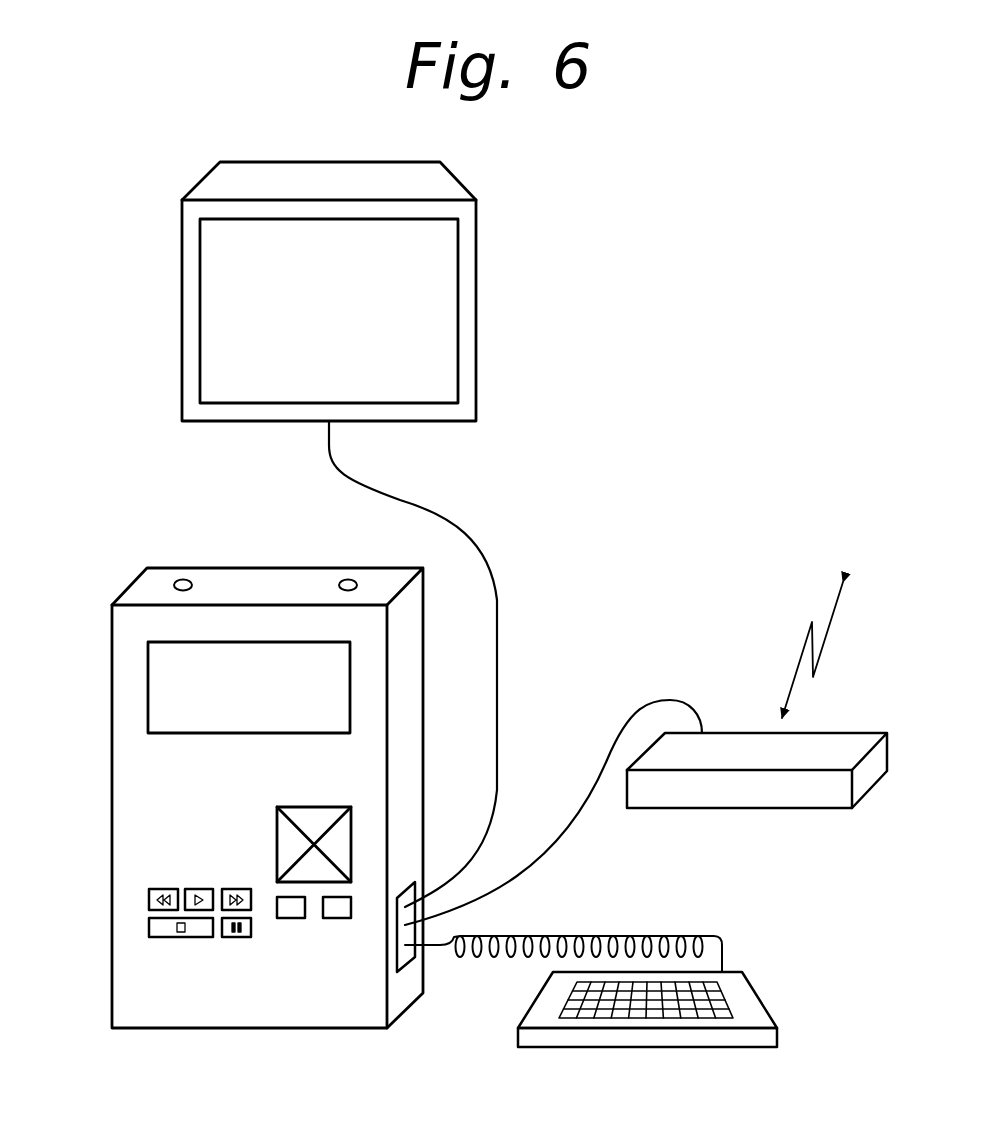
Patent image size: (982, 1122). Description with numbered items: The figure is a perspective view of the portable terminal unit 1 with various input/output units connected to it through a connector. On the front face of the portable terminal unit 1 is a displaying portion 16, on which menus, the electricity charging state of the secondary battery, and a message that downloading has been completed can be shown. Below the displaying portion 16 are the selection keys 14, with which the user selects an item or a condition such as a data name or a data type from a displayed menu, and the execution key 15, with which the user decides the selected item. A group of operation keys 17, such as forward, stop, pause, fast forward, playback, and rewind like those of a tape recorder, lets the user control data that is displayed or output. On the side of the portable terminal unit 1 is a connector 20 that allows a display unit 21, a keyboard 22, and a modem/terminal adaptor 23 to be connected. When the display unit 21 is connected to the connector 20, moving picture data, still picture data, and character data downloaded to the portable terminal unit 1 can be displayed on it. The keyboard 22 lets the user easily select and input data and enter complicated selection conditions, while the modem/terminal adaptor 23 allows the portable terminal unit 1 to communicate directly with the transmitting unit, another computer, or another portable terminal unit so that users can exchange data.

The portable terminal unit 1 is at (198, 544).
The selection keys 14 is at (351, 840).
The execution key 15 is at (291, 918).
The displaying portion 16 is at (183, 688).
The operation keys 17 is at (178, 877).
The connector 20 is at (412, 958).
The display unit 21 is at (476, 307).
The keyboard 22 is at (762, 997).
The modem/terminal adaptor 23 is at (815, 808).